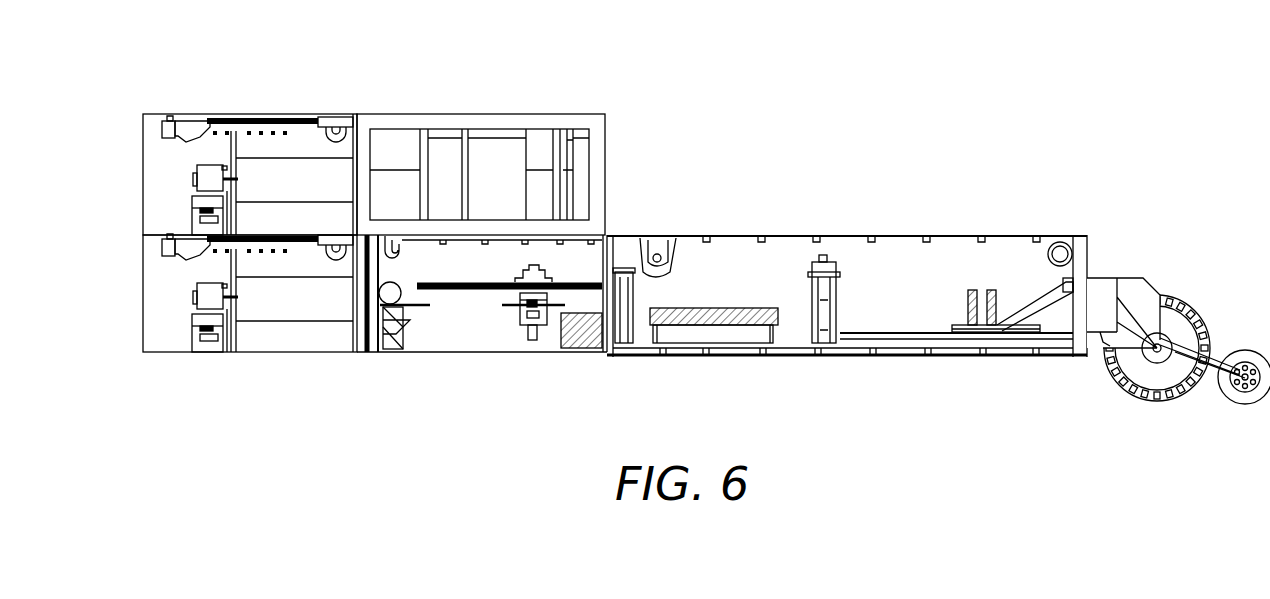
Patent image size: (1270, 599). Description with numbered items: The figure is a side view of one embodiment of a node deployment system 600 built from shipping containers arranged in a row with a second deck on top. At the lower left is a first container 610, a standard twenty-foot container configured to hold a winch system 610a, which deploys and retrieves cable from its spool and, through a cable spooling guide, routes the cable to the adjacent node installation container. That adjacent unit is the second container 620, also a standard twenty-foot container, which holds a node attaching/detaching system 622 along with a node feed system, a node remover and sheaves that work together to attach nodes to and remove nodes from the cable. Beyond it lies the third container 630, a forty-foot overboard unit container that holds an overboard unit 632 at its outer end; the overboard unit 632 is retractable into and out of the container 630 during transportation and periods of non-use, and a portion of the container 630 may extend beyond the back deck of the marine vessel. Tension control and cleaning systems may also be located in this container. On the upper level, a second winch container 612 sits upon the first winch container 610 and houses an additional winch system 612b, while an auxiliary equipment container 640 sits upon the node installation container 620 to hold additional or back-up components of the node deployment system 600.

The node deployment system 600 is at (900, 94).
The first container 610 is at (143, 355).
The winch system 610a is at (285, 308).
The second winch container 612 is at (149, 112).
The additional winch system 612b is at (297, 170).
The second container 620 is at (395, 352).
The node attaching/detaching system 622 is at (520, 330).
The third container 630 is at (636, 357).
The overboard unit 632 is at (1192, 315).
The auxiliary equipment container 640 is at (405, 113).